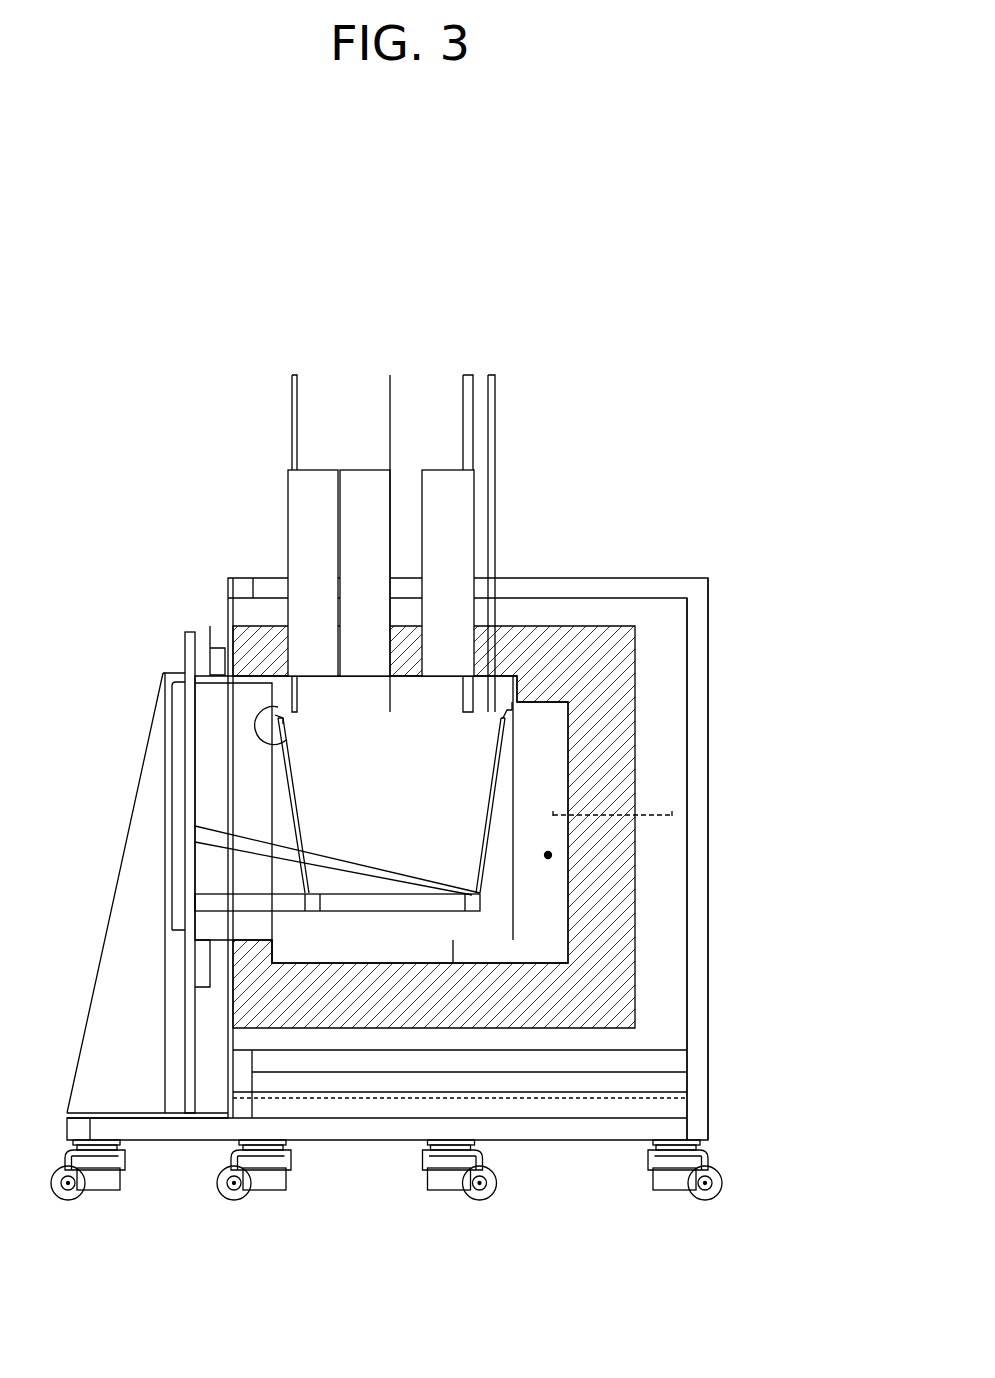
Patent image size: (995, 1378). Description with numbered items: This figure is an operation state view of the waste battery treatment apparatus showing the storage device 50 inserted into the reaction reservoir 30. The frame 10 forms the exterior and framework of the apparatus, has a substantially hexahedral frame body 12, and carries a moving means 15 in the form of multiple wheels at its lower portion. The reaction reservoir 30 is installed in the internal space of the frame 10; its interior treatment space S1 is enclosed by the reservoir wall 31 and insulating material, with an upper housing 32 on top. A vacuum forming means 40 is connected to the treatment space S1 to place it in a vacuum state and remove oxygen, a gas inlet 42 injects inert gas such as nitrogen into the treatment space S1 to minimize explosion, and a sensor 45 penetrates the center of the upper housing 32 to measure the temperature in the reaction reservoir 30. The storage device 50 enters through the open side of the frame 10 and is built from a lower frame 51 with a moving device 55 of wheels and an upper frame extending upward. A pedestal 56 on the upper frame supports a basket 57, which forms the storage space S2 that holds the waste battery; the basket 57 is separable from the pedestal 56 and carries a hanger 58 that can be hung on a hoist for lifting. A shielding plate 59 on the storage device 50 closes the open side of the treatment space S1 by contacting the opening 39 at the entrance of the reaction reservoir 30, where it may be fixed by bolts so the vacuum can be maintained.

The frame 10 is at (709, 943).
The frame body 12 is at (702, 980).
The moving means 15 is at (235, 1200).
The reaction reservoir 30 is at (636, 678).
The heating chamber 31 is at (630, 715).
The upper housing 32 is at (598, 627).
The opening 39 is at (196, 628).
The vacuum forming means 40 is at (290, 373).
The gas inlet 42 is at (497, 398).
The sensor 45 is at (392, 373).
The storage device 50 is at (137, 782).
The lower frame 51 is at (150, 1128).
The moving device 55 is at (68, 1200).
The pedestal 56 is at (332, 905).
The basket 57 is at (280, 695).
The hanger 58 is at (512, 690).
The shielding plate 59 is at (183, 653).
The treatment space S1 is at (548, 855).
The storage space S2 is at (402, 829).